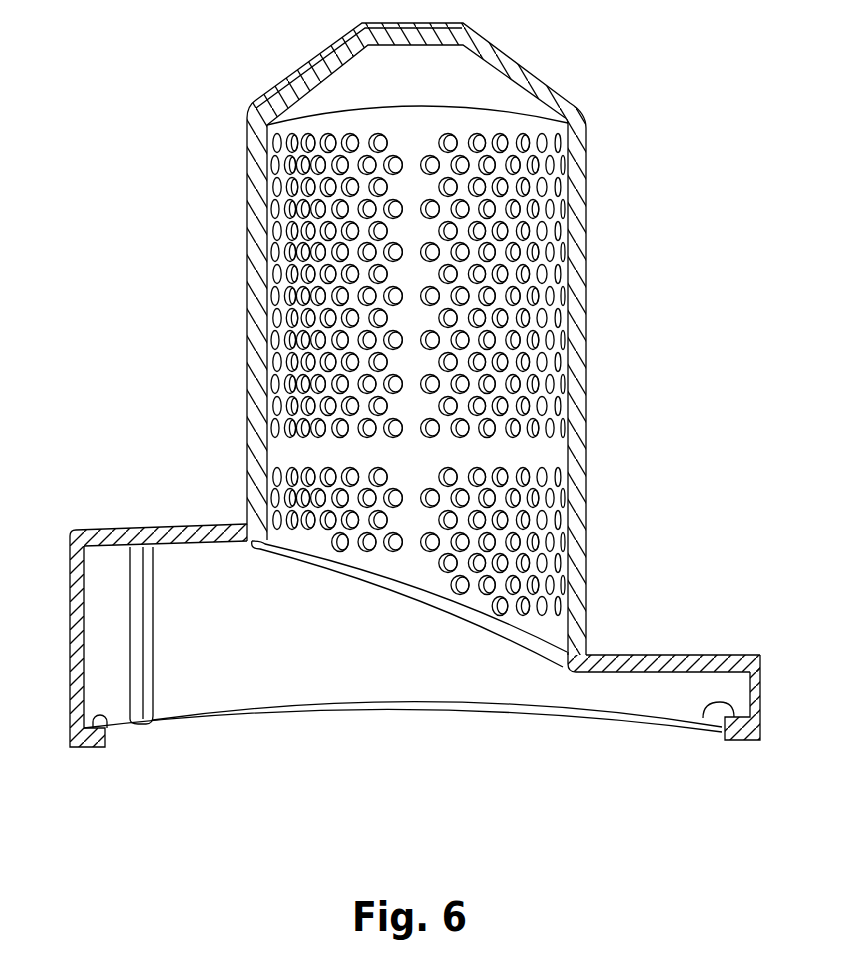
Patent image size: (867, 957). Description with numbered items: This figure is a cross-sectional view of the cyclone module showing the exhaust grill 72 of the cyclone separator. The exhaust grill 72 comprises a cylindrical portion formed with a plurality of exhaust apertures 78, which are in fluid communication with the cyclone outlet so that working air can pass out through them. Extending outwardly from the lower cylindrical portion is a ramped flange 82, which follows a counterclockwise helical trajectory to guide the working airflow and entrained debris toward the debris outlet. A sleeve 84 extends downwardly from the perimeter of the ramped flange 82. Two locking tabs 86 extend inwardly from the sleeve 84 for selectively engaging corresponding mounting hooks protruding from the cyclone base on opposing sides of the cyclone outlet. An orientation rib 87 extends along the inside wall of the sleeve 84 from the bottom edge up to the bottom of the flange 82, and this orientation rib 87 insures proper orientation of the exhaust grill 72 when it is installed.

The exhaust grill 72 is at (131, 132).
The exhaust apertures 78 is at (292, 300).
The ramped flange 82 is at (153, 528).
The sleeve 84 is at (70, 615).
The locking tabs 86 is at (105, 723).
The orientation rib 87 is at (150, 655).